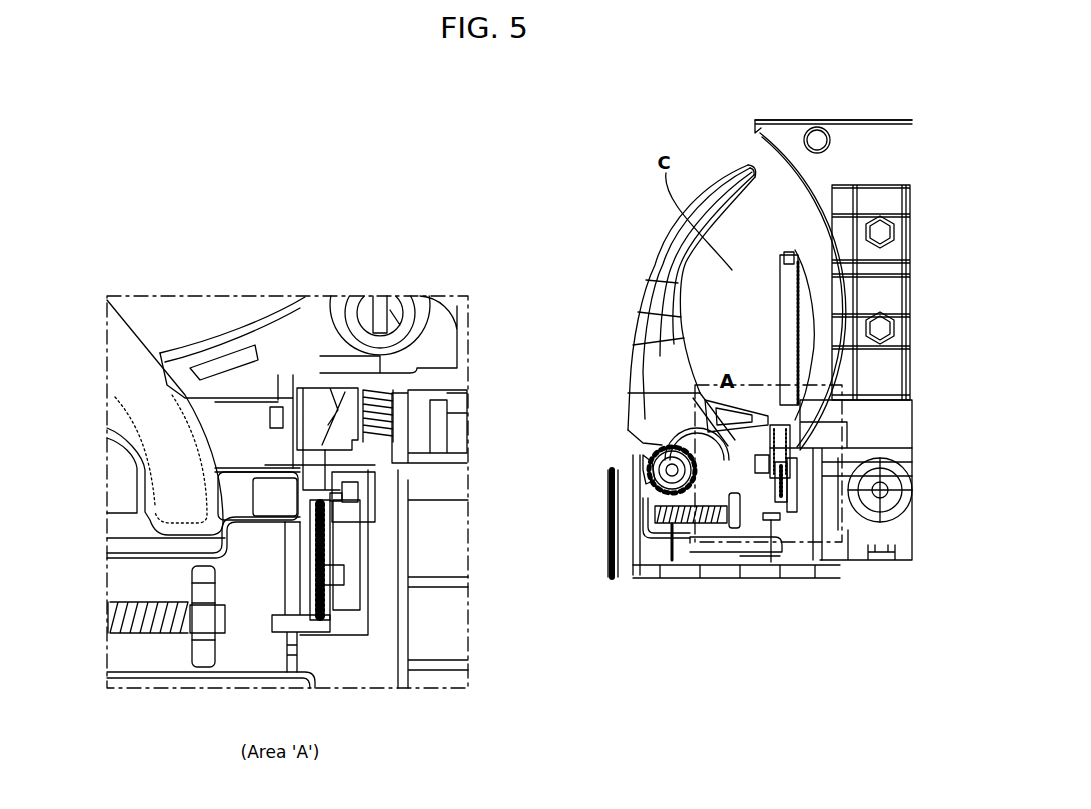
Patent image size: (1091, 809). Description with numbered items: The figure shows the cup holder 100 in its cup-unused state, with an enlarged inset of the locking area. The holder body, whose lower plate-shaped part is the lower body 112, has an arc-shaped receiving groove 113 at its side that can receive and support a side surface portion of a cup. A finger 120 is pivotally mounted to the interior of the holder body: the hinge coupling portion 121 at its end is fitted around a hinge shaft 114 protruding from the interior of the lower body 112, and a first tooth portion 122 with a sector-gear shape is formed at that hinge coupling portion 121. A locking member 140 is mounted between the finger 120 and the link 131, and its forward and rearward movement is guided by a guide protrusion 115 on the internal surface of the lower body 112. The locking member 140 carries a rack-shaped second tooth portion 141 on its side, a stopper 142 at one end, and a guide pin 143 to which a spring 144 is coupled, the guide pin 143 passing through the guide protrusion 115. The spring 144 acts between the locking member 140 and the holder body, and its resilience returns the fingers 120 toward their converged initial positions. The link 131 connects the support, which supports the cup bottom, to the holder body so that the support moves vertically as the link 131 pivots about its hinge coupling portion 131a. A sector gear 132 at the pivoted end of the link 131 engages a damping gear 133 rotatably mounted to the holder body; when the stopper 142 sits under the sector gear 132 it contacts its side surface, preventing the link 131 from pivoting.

The cup holder 100 is at (608, 545).
The lower body 112 is at (838, 565).
The receiving groove 113 is at (795, 140).
The hinge shaft 114 is at (660, 452).
The guide protrusion 115 is at (787, 482).
The finger 120 is at (657, 251).
The hinge coupling portion 121 is at (648, 470).
The first tooth portion 122 is at (645, 540).
The link 131 is at (778, 312).
The hinge coupling portion 131a is at (336, 406).
The sector gear 132 is at (332, 498).
The damping gear 133 is at (330, 602).
The locking member 140 is at (754, 556).
The second tooth portion 141 is at (672, 546).
The stopper 142 is at (762, 460).
The guide pin 143 is at (208, 627).
The spring 144 is at (735, 553).